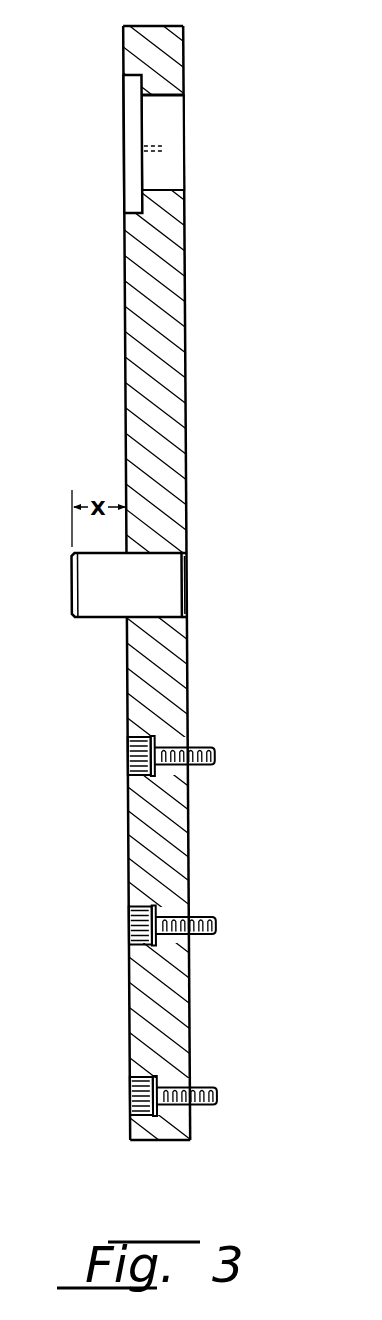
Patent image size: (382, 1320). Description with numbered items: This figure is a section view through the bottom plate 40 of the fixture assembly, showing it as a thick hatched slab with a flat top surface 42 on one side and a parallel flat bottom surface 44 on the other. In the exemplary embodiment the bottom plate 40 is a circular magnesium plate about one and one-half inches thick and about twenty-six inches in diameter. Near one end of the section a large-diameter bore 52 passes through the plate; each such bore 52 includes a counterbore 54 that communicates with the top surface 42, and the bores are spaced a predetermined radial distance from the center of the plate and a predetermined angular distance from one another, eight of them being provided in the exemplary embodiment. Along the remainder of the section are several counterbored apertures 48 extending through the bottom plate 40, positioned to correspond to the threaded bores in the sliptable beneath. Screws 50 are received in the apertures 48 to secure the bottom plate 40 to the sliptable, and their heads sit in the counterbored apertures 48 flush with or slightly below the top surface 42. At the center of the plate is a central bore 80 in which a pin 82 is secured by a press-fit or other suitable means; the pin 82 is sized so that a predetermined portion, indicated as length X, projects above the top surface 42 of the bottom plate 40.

The bottom plate 40 is at (127, 1012).
The top surface 42 is at (125, 295).
The bottom surface 44 is at (186, 348).
The counterbored apertures 48 is at (198, 746).
The screws 50 is at (213, 763).
The large-diameter bores 52 is at (171, 98).
The counterbore 54 is at (123, 78).
The central bore 80 is at (160, 555).
The pin 82 is at (110, 605).